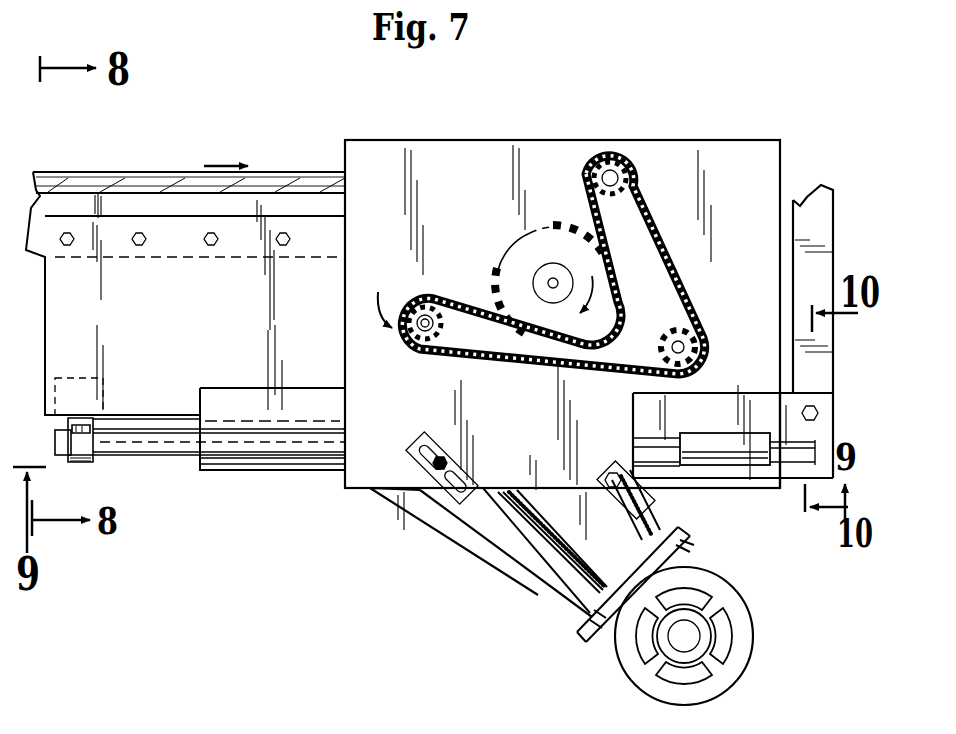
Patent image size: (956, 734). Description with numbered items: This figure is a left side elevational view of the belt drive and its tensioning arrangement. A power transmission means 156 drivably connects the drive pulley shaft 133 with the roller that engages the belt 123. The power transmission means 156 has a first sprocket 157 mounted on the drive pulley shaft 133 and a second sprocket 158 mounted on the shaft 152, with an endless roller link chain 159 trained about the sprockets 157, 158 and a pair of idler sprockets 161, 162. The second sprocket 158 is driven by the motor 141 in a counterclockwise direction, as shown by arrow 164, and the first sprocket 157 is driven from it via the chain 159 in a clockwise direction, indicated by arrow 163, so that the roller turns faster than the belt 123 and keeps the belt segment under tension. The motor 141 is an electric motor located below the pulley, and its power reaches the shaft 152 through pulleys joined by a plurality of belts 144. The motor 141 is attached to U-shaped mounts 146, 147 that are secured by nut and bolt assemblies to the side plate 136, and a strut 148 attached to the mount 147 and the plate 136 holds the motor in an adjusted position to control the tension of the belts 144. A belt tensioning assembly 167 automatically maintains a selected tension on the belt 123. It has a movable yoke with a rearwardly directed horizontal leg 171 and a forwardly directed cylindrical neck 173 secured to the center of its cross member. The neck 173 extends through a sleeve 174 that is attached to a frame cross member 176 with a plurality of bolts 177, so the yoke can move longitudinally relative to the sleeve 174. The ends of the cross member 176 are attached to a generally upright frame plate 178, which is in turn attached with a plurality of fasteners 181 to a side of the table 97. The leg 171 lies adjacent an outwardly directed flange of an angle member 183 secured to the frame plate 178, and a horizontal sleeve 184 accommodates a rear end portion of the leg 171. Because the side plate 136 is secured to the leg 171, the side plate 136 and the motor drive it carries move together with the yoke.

The table 97 is at (250, 210).
The belt 123 is at (140, 173).
The drive pulley shaft 133 is at (553, 283).
The side plate 136 is at (482, 148).
The motor 141 is at (725, 680).
The belts 144 is at (538, 528).
The U-shaped mount 146 is at (660, 512).
The U-shaped mount 147 is at (548, 582).
The strut 148 is at (452, 528).
The shaft 152 is at (426, 316).
The power transmission means 156 is at (686, 160).
The first sprocket 157 is at (543, 234).
The second sprocket 158 is at (425, 337).
The endless roller link chain 159 is at (670, 255).
The idler sprocket 161 is at (611, 160).
The idler sprocket 162 is at (700, 332).
The arrow 163 is at (600, 302).
The arrow 164 is at (383, 299).
The belt tensioning assembly 167 is at (212, 483).
The leg 171 is at (266, 458).
The cylindrical neck 173 is at (118, 448).
The sleeve 174 is at (80, 462).
The frame cross member 176 is at (106, 385).
The bolts 177 is at (60, 440).
The frame plate 178 is at (172, 331).
The fasteners 181 is at (66, 247).
The angle member 183 is at (818, 430).
The horizontal sleeve 184 is at (722, 442).